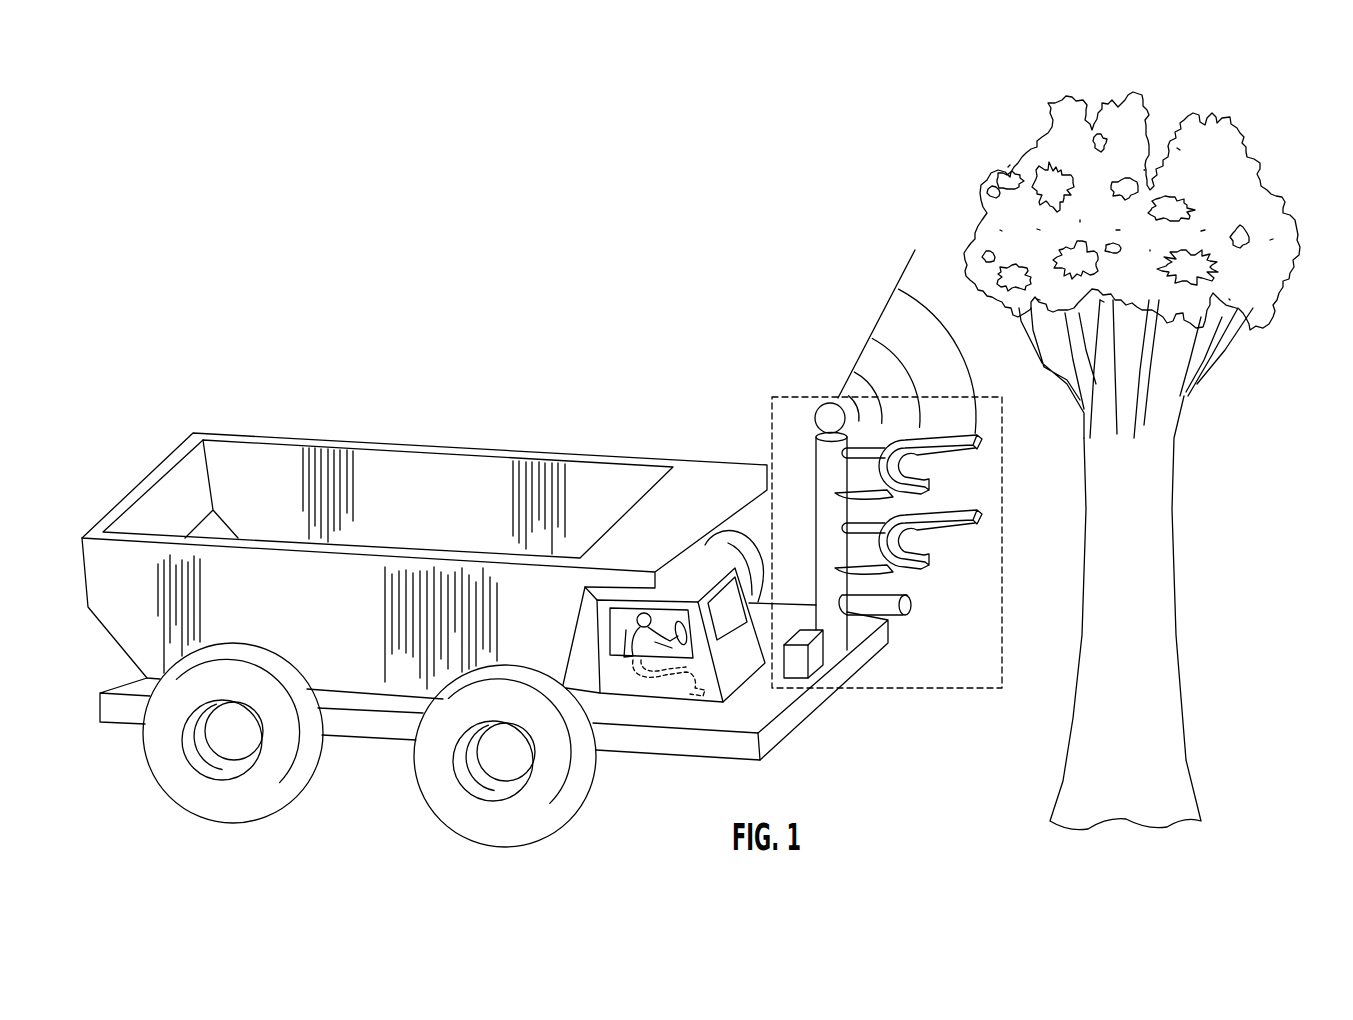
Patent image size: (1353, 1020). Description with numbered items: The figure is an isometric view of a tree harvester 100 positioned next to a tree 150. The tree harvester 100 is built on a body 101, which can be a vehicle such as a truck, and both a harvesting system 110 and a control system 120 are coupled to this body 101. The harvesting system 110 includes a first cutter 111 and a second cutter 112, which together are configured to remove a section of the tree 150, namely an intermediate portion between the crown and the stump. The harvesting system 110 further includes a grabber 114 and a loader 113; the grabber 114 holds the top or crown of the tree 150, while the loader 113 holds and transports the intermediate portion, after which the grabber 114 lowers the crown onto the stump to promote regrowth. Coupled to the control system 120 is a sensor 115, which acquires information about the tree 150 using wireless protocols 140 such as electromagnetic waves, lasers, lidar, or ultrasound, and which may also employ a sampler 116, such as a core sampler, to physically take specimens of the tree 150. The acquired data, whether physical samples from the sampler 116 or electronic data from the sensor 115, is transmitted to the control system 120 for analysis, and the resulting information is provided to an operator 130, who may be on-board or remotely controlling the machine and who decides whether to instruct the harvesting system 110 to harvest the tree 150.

The tree harvester 100 is at (472, 386).
The body 101 is at (370, 677).
The harvesting system 110 is at (817, 376).
The first cutter 111 is at (897, 497).
The second cutter 112 is at (895, 572).
The loader 113 is at (937, 561).
The grabber 114 is at (937, 486).
The sensor 115 is at (815, 417).
The sampler 116 is at (902, 628).
The control system 120 is at (814, 658).
The operator 130 is at (673, 688).
The wireless protocols 140 is at (903, 264).
The tree 150 is at (1244, 126).